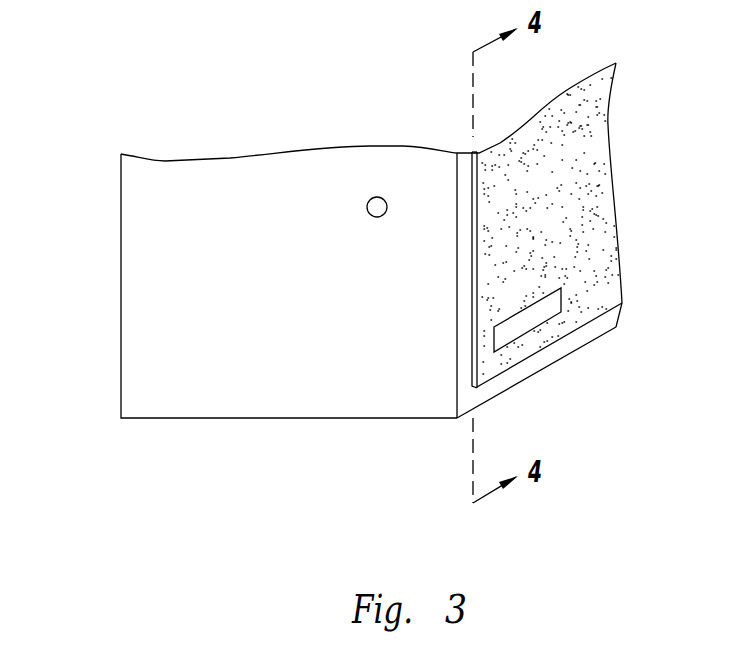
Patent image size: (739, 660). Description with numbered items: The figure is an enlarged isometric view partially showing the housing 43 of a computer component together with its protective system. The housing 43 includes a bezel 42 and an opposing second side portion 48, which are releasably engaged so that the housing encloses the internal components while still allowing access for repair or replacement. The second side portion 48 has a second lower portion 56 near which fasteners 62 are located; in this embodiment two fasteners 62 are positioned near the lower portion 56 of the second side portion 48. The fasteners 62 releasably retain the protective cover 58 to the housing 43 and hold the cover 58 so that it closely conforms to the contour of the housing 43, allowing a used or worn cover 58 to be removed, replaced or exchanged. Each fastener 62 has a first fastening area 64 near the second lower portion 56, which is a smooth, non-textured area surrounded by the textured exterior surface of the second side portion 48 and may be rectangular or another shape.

The bezel 42 is at (121, 285).
The housing 43 is at (595, 331).
The second side portion 48 is at (464, 338).
The second lower portion 56 is at (465, 362).
The protective cover 58 is at (472, 185).
The fastener 62 is at (512, 342).
The first fastening area 64 is at (541, 313).